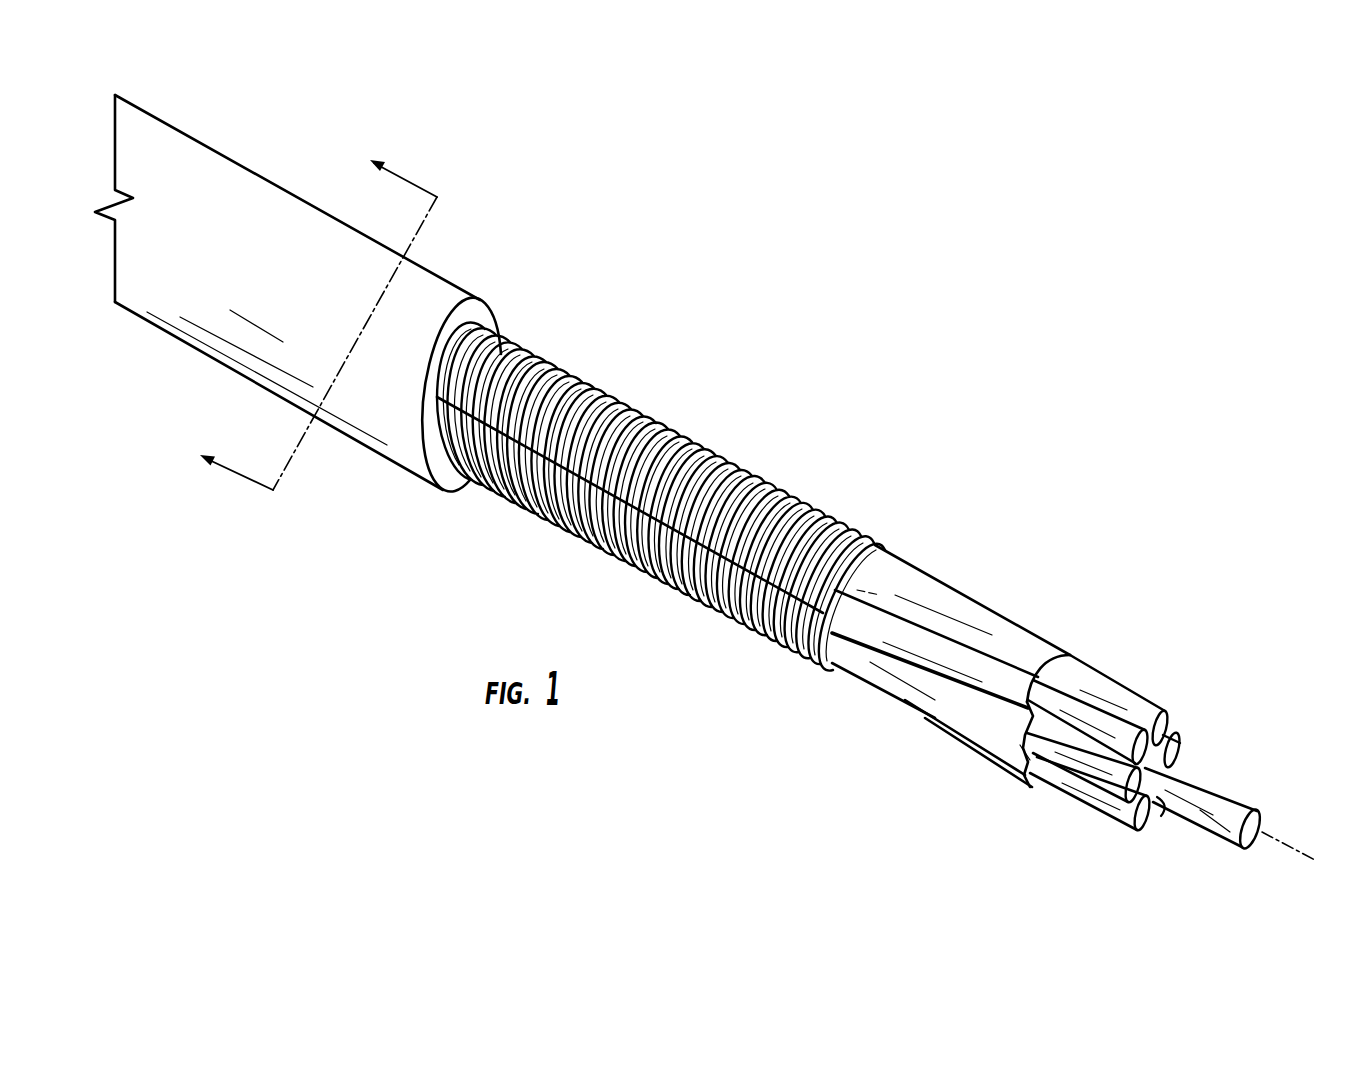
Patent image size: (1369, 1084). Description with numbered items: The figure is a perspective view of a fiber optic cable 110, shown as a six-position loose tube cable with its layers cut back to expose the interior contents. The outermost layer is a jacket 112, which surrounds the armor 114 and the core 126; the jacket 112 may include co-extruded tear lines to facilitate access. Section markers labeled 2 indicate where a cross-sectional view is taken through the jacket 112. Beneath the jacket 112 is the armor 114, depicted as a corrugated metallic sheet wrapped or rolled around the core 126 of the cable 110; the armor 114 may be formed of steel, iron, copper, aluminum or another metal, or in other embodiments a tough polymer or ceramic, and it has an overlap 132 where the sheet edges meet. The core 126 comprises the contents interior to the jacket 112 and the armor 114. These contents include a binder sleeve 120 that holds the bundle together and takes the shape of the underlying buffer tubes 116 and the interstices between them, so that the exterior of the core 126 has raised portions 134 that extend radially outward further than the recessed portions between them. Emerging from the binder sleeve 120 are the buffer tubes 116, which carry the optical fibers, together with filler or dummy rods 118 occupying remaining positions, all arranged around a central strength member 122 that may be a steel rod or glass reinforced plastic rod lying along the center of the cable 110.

The fiber optic cable 110 is at (938, 423).
The jacket 112 is at (197, 165).
The armor 114 is at (682, 450).
The buffer tubes 116 is at (1088, 712).
The filler or dummy rods 118 is at (1163, 818).
The binder sleeve 120 is at (977, 607).
The central strength member 122 is at (1213, 790).
The core 126 is at (982, 776).
The overlap 132 is at (782, 583).
The raised portions 134 is at (880, 670).
The section line 2- 2 is at (307, 314).